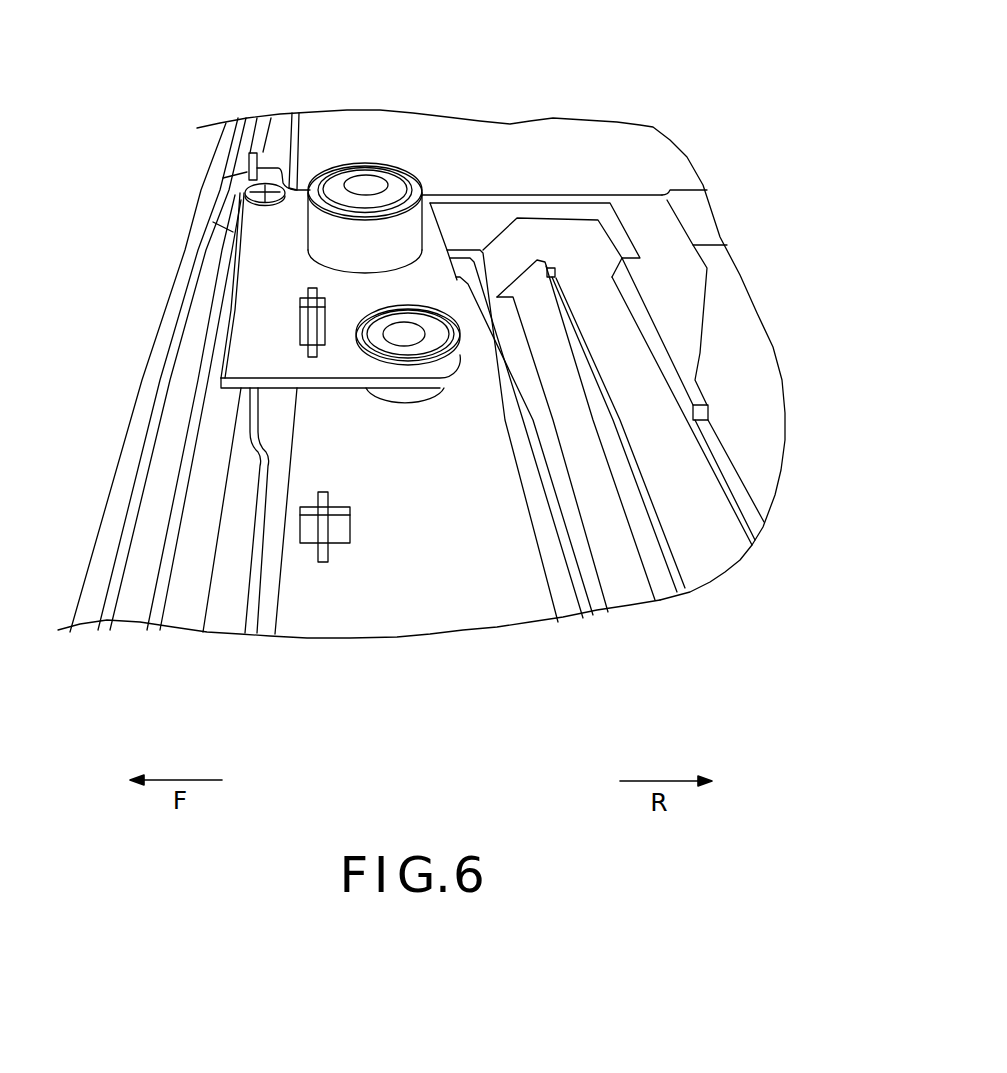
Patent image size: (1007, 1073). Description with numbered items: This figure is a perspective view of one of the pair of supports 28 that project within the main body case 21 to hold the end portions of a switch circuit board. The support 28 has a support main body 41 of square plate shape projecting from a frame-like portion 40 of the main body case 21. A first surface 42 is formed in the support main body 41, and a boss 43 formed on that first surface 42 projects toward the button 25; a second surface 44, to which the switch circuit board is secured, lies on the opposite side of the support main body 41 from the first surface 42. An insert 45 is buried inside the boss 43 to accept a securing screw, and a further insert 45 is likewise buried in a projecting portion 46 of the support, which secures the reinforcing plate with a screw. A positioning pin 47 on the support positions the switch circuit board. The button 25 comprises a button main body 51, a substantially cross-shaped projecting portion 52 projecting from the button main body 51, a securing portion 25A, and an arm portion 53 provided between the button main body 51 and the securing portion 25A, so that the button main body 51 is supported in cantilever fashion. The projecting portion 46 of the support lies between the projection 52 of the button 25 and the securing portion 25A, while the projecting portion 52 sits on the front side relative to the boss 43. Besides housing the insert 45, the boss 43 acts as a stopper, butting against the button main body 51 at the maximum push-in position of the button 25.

The main body case 21 is at (613, 135).
The button 25 is at (494, 595).
The securing portion 25A is at (680, 470).
The support 28 is at (262, 261).
The frame-like portion 40 is at (252, 132).
The support main body 41 is at (427, 277).
The first surface 42 is at (273, 388).
The boss 43 is at (423, 395).
The second surface 44 is at (247, 338).
The insert 45 is at (340, 182).
The projecting portion 46 is at (307, 213).
The positioning pin 47 is at (298, 312).
The button main body 51 is at (385, 615).
The projecting portion 52 is at (308, 533).
The arm portion 53 is at (512, 247).